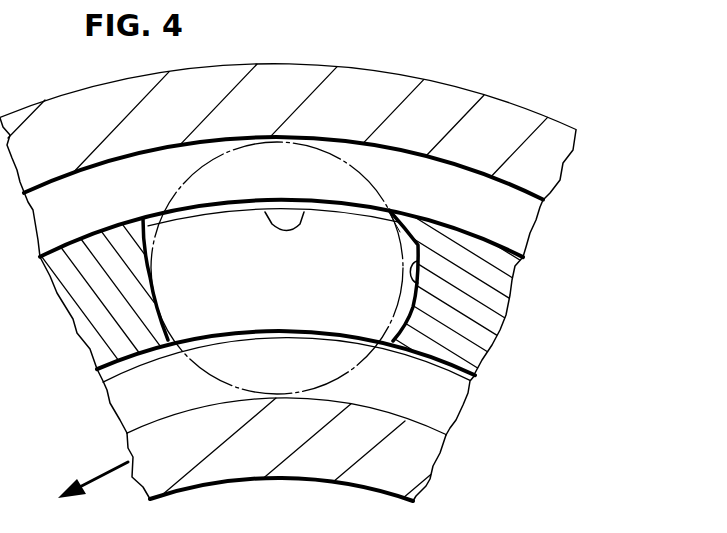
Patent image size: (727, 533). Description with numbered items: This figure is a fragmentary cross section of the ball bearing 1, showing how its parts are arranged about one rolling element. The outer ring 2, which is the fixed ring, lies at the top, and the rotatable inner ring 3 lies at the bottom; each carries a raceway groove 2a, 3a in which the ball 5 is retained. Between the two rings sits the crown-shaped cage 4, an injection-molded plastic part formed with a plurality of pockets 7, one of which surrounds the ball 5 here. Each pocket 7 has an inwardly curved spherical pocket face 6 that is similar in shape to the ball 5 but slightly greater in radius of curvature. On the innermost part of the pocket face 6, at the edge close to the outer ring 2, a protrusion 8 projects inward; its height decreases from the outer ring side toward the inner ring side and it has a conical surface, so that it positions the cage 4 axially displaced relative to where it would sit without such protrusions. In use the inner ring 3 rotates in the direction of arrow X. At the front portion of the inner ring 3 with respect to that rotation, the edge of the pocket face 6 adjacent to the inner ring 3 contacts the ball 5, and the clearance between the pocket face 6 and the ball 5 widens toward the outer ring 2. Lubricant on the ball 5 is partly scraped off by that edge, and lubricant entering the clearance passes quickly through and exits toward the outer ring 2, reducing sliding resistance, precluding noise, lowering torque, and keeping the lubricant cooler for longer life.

The ball bearing 1 is at (551, 104).
The outer ring 2 is at (455, 97).
The raceway groove 2a is at (534, 206).
The inner ring 3 is at (403, 463).
The raceway groove 3a is at (430, 424).
The crown-shaped cage 4 is at (473, 328).
The ball 5 is at (325, 148).
The pocket face 6 is at (420, 265).
The pocket 7 is at (402, 233).
The protrusion 8 is at (287, 233).
The direction of rotation X is at (97, 470).